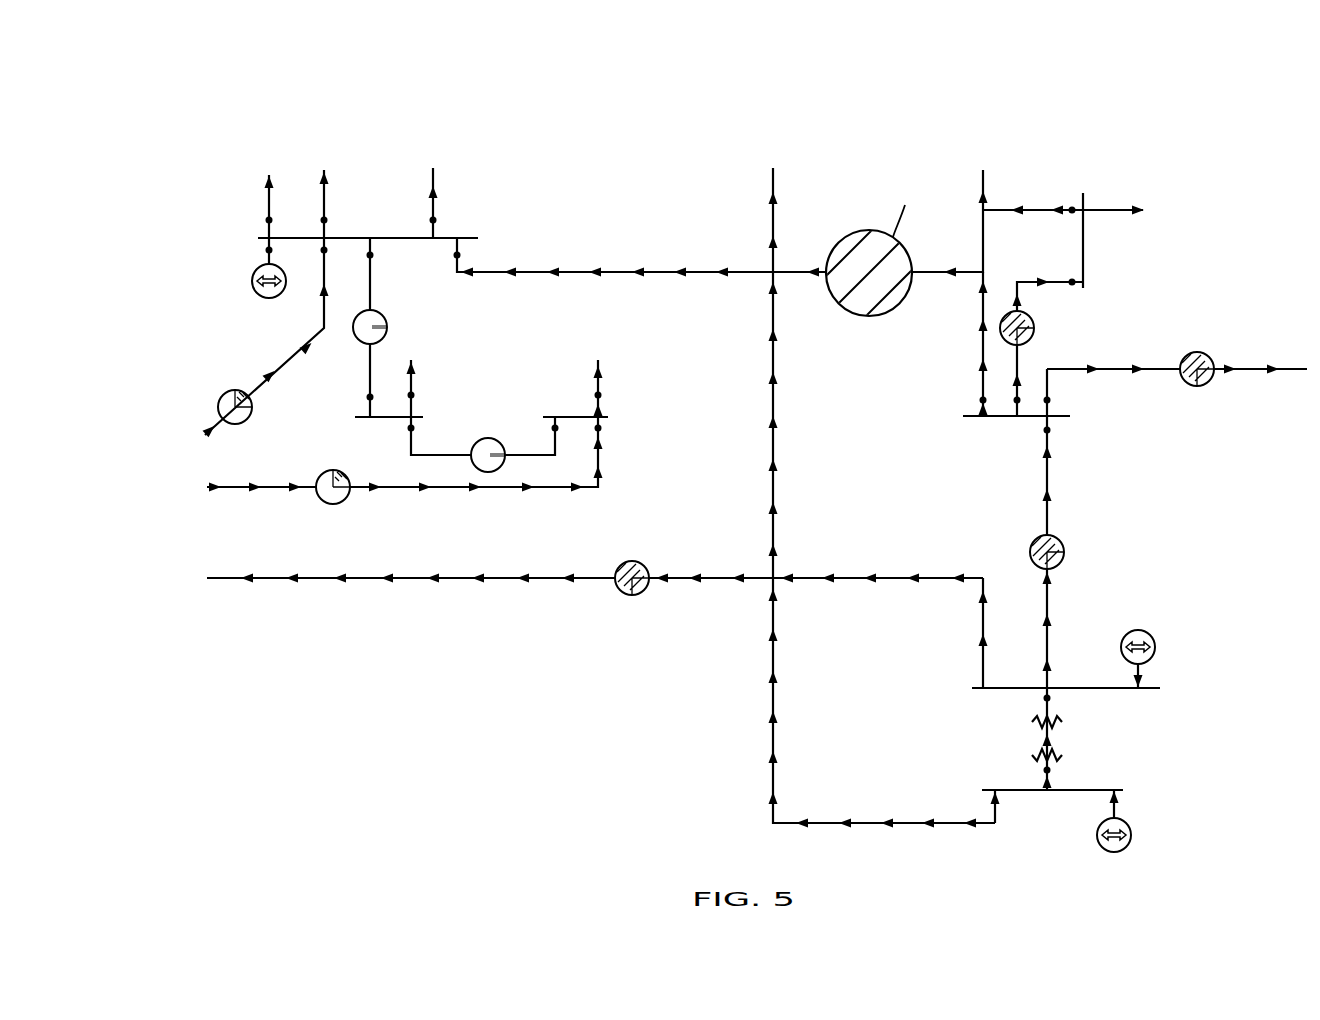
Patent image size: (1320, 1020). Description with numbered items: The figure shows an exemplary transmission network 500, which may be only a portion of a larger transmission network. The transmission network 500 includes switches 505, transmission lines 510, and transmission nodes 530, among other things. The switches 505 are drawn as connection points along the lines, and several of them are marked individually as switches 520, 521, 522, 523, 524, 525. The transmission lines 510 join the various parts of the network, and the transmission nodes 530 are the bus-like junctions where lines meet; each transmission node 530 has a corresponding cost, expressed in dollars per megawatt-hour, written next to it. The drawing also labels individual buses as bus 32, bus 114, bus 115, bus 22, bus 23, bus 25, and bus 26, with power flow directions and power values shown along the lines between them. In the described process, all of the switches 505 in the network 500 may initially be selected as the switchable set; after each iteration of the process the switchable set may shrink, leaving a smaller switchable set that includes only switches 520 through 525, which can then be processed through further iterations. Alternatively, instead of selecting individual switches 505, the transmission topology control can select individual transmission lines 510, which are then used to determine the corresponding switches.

The transmission network 500 is at (119, 128).
The switches 505 is at (433, 222).
The transmission lines 510 is at (757, 578).
The switch 520 is at (436, 212).
The switch 521 is at (995, 800).
The switch 522 is at (983, 682).
The switch 523 is at (1072, 210).
The switch 524 is at (1072, 282).
The switch 525 is at (1050, 402).
The transmission nodes 530 is at (462, 236).
The bus 22 is at (1098, 237).
The bus 23 is at (1048, 415).
The bus 25 is at (1095, 645).
The bus 26 is at (1084, 826).
The bus 32 is at (386, 291).
The bus 114 is at (429, 416).
The bus 115 is at (453, 418).